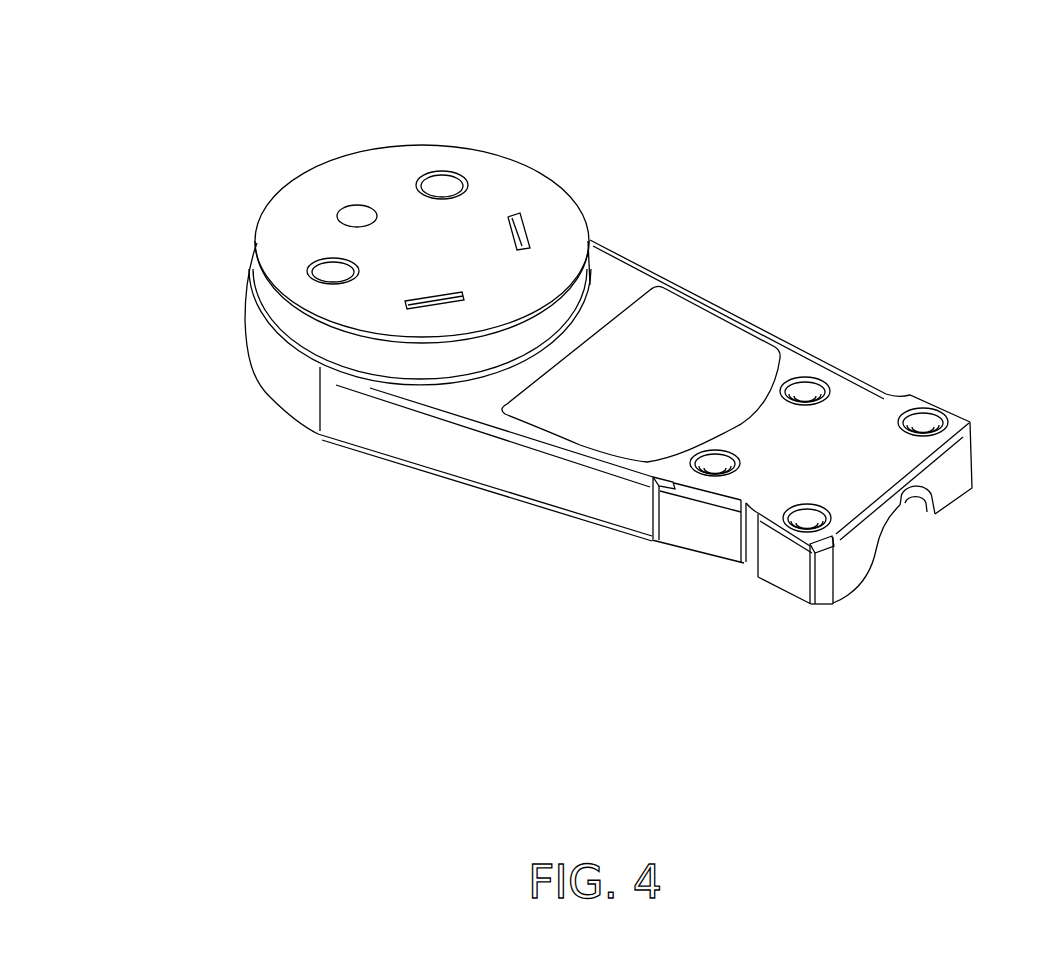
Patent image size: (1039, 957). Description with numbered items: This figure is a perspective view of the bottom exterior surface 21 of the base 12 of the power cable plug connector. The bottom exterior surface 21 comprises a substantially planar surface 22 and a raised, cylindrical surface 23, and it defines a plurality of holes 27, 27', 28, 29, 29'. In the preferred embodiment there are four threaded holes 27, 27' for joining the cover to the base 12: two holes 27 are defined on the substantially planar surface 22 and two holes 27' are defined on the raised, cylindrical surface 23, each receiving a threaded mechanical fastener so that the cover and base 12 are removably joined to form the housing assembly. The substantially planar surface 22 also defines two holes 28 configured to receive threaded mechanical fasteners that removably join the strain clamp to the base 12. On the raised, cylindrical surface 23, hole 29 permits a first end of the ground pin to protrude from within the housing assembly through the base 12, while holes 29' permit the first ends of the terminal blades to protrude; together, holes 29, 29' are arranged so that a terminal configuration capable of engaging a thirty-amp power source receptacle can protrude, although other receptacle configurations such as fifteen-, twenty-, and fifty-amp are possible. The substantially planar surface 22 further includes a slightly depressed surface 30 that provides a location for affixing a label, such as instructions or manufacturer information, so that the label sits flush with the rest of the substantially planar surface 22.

The base 12 is at (420, 441).
The bottom exterior surface 21 is at (628, 273).
The substantially planar surface 22 is at (803, 463).
The raised, cylindrical surface 23 is at (395, 253).
The holes 27 is at (758, 454).
The holes 27' is at (313, 153).
The holes 28 is at (930, 402).
The hole 29 is at (333, 132).
The holes 29' is at (508, 197).
The slightly depressed surface 30 is at (687, 340).